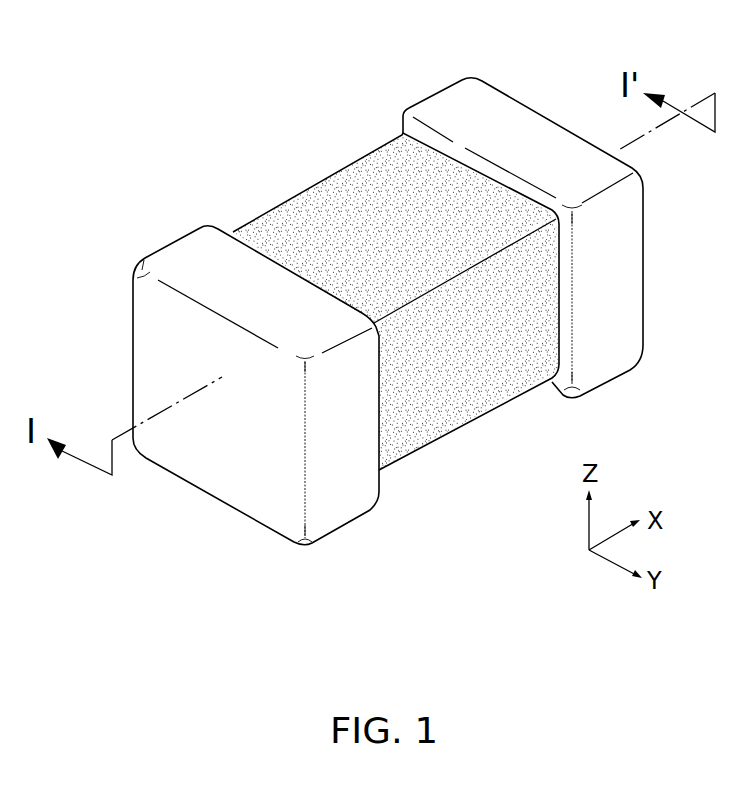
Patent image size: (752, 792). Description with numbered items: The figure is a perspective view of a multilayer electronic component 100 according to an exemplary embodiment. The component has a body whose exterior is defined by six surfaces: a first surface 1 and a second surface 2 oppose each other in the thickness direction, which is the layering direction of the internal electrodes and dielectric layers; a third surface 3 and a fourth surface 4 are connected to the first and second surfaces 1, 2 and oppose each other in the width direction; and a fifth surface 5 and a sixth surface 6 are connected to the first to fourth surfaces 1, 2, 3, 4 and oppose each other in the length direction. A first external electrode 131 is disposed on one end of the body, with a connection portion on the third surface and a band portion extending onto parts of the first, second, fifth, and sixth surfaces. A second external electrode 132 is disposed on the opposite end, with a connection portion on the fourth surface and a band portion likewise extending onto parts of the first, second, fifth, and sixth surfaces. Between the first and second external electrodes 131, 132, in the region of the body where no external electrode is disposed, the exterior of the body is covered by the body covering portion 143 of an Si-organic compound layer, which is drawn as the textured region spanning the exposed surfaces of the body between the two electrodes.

The multilayer electronic component 100 is at (190, 85).
The first surface 1 is at (428, 396).
The second surface 2 is at (405, 190).
The third surface 3 is at (223, 442).
The fourth surface 4 is at (594, 248).
The fifth surface 5 is at (486, 368).
The sixth surface 6 is at (343, 208).
The first external electrode 131 is at (188, 258).
The second external electrode 132 is at (447, 113).
The body covering portion 143 is at (268, 240).